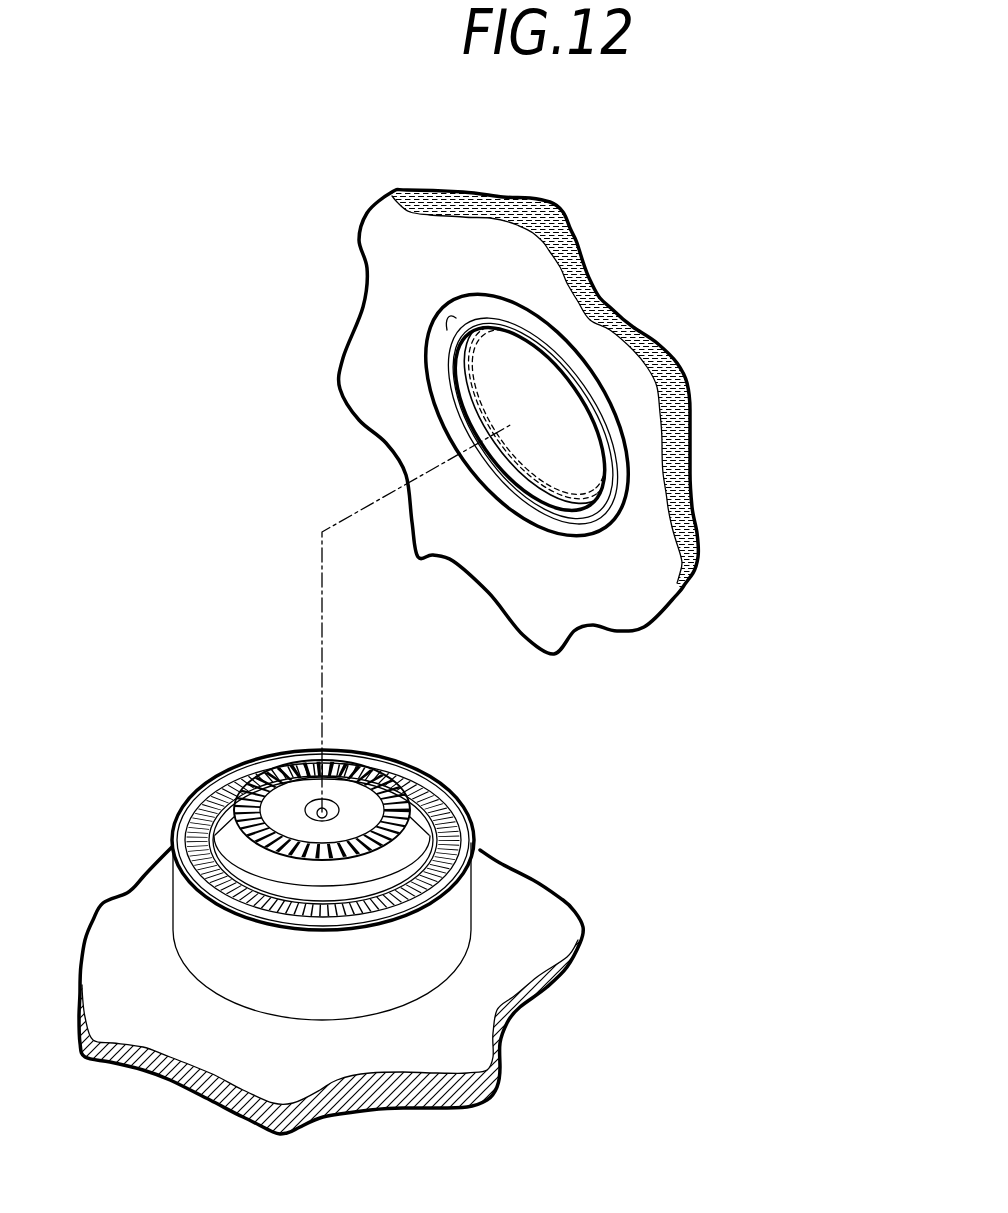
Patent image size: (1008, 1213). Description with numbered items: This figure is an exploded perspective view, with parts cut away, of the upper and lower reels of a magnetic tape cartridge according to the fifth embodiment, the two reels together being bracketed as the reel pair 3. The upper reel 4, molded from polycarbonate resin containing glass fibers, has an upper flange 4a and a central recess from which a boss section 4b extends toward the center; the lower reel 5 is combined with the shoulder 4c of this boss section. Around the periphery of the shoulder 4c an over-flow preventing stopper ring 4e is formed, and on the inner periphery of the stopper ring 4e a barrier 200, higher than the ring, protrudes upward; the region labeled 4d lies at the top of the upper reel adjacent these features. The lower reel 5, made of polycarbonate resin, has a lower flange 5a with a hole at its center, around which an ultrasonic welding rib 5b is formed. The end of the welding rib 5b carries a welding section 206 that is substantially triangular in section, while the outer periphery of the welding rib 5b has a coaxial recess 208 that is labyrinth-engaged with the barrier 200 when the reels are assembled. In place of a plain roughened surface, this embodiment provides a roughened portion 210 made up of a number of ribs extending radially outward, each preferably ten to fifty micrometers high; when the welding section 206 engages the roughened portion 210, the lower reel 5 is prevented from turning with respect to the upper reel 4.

The cap assembly 3 is at (735, 940).
The upper reel 4 is at (384, 906).
The upper flange 4a is at (477, 1025).
The boss section 4b is at (473, 910).
The shoulder 4c is at (340, 781).
The outer rim 4d is at (292, 804).
The over-flow preventing stopper ring 4e is at (267, 927).
The lower reel 5 is at (578, 422).
The lower flange 5a is at (593, 290).
The ultrasonic welding rib 5b is at (572, 369).
The barrier 200 is at (372, 925).
The welding section 206 is at (468, 490).
The recess 208 is at (613, 431).
The roughened portion 210 is at (193, 797).